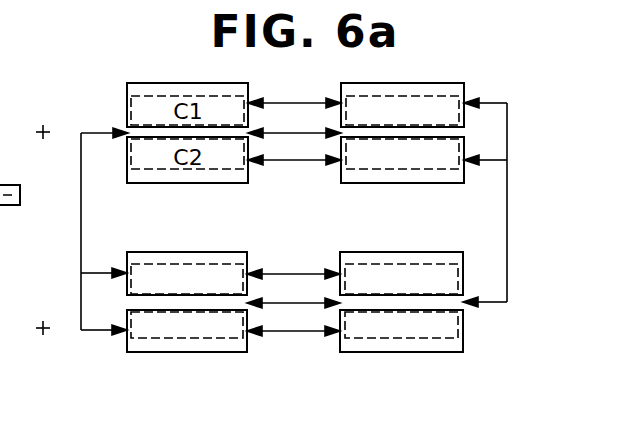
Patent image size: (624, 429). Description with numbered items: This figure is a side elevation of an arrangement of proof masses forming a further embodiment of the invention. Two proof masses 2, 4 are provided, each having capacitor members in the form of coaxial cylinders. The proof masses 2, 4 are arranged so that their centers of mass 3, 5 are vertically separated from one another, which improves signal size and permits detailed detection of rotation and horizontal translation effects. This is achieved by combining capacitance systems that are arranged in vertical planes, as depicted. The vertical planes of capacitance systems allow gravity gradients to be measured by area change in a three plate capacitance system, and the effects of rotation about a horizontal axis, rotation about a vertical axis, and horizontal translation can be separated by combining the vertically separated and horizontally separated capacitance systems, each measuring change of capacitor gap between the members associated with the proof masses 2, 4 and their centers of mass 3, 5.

The proof mass 2 is at (507, 278).
The center of mass 3 is at (40, 131).
The proof mass 4 is at (81, 234).
The center of mass 5 is at (42, 330).